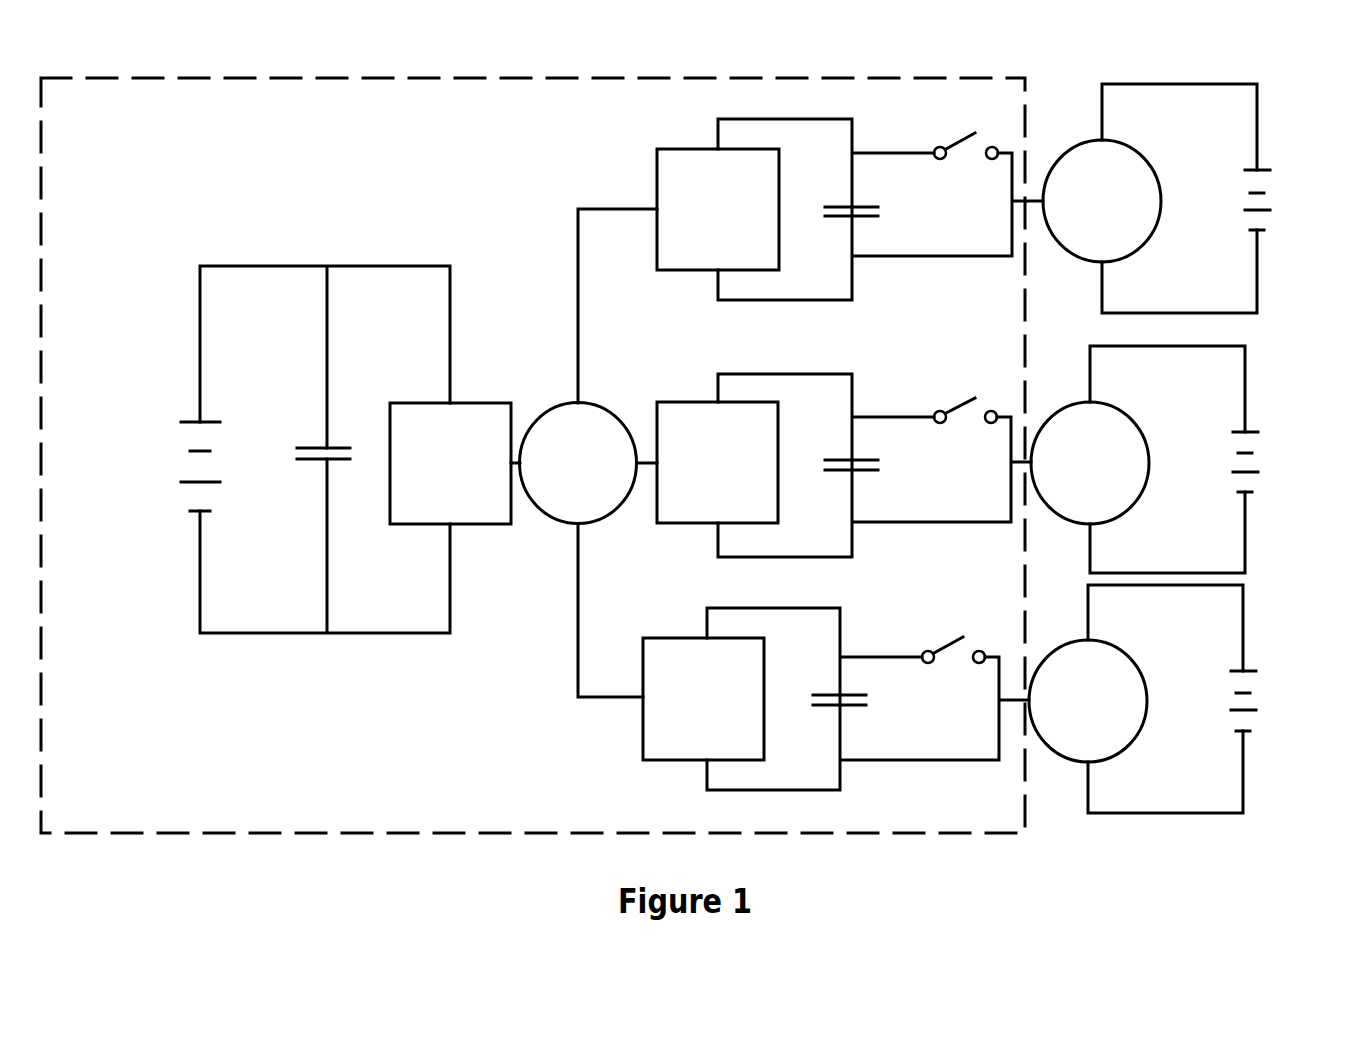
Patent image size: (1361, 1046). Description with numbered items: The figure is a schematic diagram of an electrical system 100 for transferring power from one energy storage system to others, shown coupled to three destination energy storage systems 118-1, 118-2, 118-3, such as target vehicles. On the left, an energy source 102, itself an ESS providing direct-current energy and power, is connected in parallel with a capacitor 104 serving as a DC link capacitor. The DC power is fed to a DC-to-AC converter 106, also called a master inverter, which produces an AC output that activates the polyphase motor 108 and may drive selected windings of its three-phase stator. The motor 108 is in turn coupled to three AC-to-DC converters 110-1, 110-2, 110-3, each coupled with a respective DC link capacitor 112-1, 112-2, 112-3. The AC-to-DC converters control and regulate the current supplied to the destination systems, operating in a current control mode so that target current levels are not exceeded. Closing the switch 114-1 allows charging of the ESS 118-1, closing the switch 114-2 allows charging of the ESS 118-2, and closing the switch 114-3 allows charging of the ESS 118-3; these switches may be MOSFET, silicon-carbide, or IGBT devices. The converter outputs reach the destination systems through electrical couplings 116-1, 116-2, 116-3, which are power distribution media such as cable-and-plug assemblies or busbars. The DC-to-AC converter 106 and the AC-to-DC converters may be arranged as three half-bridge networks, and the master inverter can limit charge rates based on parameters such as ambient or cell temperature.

The electrical system 100 is at (456, 49).
The energy source 102 is at (180, 466).
The capacitor 104 is at (326, 448).
The DC-to-AC converter 106 is at (450, 463).
The motor 108 is at (578, 463).
The AC-to-DC converter 110-1 is at (718, 209).
The AC-to-DC converter 110-2 is at (717, 462).
The AC-to-DC converter 110-3 is at (703, 699).
The capacitor 112-1 is at (878, 213).
The capacitor 112-2 is at (878, 467).
The capacitor 112-3 is at (866, 702).
The switch 114-1 is at (959, 139).
The switch 114-2 is at (959, 409).
The switch 114-3 is at (947, 647).
The electrical coupling 116-1 is at (1102, 201).
The electrical coupling 116-2 is at (1090, 463).
The electrical coupling 116-3 is at (1088, 701).
The destination energy storage system 118-1 is at (1272, 203).
The destination energy storage system 118-2 is at (1260, 464).
The destination energy storage system 118-3 is at (1262, 703).